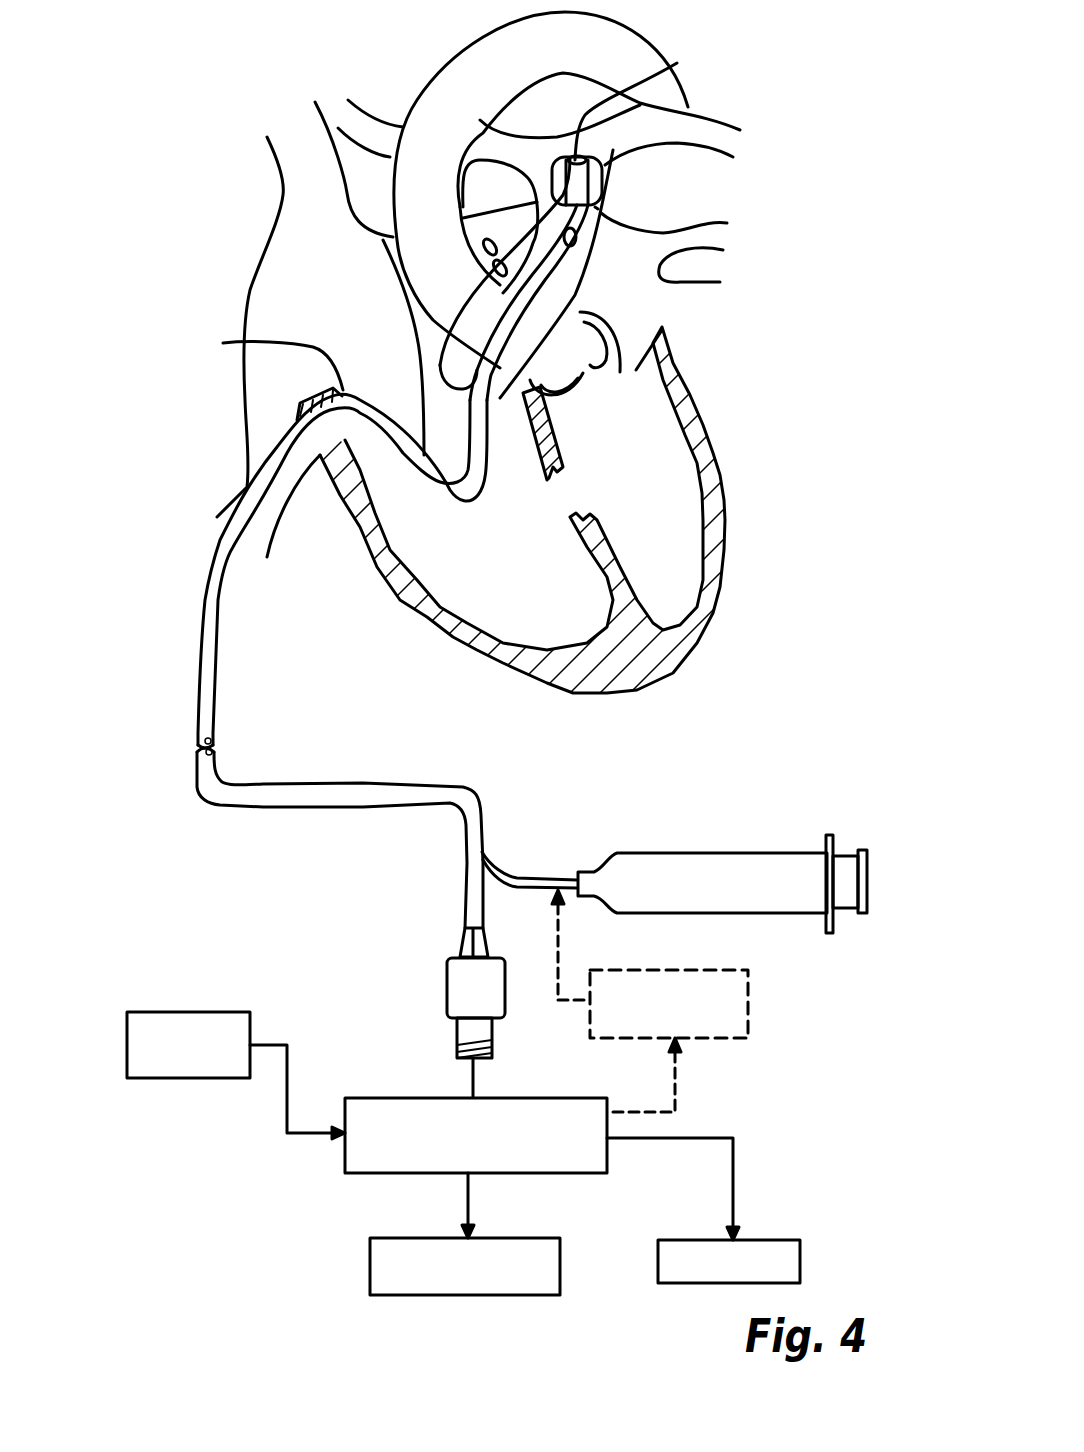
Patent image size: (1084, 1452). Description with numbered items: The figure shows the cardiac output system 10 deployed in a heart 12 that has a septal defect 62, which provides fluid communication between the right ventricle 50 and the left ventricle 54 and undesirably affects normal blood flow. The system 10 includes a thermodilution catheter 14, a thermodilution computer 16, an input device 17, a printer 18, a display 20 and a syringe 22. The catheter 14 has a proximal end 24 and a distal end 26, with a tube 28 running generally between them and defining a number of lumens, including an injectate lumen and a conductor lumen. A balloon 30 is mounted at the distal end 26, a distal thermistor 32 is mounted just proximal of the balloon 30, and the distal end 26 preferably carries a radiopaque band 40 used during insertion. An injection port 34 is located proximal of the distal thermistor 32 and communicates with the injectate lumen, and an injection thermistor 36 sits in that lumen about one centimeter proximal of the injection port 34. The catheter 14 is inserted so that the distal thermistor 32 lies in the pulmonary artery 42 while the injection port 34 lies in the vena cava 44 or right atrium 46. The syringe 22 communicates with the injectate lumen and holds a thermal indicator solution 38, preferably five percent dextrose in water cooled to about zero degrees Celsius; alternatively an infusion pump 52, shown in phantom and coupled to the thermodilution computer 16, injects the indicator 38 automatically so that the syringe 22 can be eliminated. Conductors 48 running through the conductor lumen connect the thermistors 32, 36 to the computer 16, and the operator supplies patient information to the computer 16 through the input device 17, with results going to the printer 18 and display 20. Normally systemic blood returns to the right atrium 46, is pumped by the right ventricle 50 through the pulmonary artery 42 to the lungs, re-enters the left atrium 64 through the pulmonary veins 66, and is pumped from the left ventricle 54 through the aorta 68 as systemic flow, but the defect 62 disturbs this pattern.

The cardiac output system 10 is at (226, 918).
The heart 12 is at (682, 394).
The thermodilution catheter 14 is at (190, 776).
The thermodilution computer 16 is at (345, 1153).
The input device 17 is at (143, 1078).
The printer 18 is at (370, 1265).
The display 20 is at (800, 1255).
The syringe 22 is at (757, 852).
The proximal end 24 is at (466, 890).
The distal end 26 is at (603, 161).
The tube 28 is at (213, 573).
The balloon 30 is at (595, 207).
The distal thermistor 32 is at (577, 237).
The injection port 34 is at (262, 356).
The injection thermistor 36 is at (300, 408).
The thermal indicator solution 38 is at (699, 899).
The radiopaque band 40 is at (654, 131).
The pulmonary artery 42 is at (541, 371).
The vena cava 44 is at (247, 488).
The right atrium 46 is at (334, 291).
The conductors 48 is at (473, 1080).
The right ventricle 50 is at (509, 562).
The infusion pump 52 is at (750, 993).
The left ventricle 54 is at (650, 439).
The septal defect 62 is at (567, 500).
The left atrium 64 is at (650, 334).
The pulmonary veins 66 is at (725, 250).
The aorta 68 is at (447, 169).